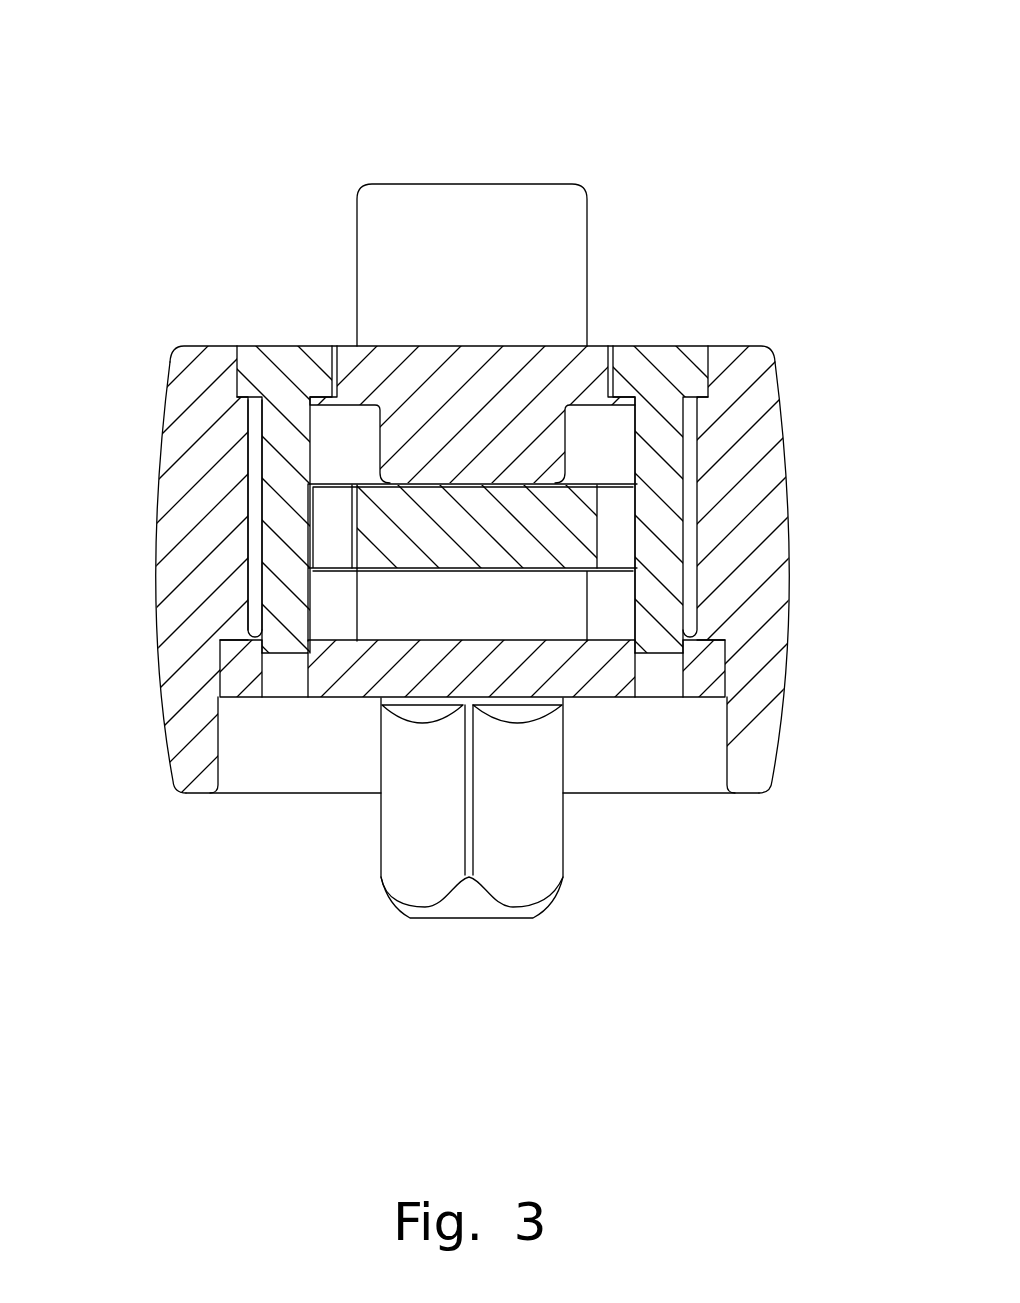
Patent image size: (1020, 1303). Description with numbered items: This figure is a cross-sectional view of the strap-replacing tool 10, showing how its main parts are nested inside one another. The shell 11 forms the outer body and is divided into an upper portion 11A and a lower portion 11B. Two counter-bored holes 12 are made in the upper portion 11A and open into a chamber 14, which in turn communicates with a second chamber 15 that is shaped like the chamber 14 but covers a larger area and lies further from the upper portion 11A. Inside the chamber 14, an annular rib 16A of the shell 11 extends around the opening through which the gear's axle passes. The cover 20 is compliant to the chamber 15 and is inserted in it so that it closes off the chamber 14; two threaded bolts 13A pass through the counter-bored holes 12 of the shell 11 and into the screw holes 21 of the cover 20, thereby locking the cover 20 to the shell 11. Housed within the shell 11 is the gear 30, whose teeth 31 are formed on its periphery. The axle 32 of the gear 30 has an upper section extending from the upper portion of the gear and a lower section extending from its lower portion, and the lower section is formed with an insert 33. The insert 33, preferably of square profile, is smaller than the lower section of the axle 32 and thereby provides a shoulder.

The strap-replacing tool 10 is at (308, 158).
The shell 11 is at (757, 700).
The upper portion 11A is at (734, 350).
The lower portion 11B is at (196, 795).
The counter-bored holes 12 is at (611, 360).
The threaded bolts 13A is at (277, 434).
The chamber 14 is at (245, 629).
The chamber 15 is at (724, 742).
The annular rib 16A is at (613, 438).
The cover 20 is at (346, 685).
The screw holes 21 is at (667, 683).
The gear 30 is at (373, 522).
The teeth 31 is at (615, 530).
The axle 32 is at (570, 213).
The insert 33 is at (522, 892).